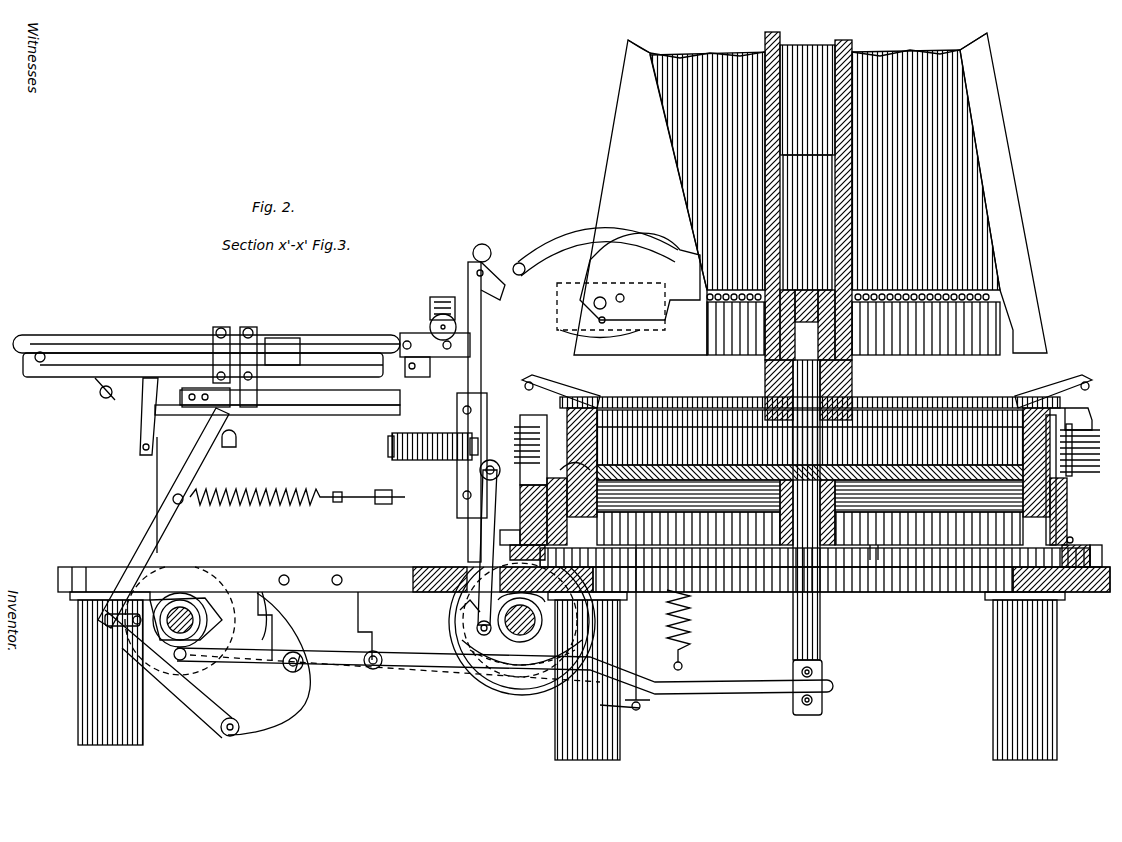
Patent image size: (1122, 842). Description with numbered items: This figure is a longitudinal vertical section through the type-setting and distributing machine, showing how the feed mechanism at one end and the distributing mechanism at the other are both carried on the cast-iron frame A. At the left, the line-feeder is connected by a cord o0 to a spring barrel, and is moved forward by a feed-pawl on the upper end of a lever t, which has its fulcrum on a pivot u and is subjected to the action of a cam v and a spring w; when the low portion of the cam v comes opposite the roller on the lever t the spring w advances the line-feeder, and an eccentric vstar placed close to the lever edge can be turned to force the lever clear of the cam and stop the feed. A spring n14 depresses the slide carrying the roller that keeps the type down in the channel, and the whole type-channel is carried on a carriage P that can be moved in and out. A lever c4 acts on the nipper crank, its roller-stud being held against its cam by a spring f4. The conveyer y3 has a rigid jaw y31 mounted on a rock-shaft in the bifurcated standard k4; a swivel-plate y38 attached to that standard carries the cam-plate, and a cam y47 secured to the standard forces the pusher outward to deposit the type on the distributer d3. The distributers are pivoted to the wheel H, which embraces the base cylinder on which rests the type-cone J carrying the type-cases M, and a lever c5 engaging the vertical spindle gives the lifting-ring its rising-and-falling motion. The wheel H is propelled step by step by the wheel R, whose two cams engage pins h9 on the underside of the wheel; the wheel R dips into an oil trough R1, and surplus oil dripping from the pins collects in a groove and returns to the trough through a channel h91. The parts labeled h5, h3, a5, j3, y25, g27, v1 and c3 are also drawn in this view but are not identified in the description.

The type-cases M is at (810, 194).
The type-cone J is at (900, 326).
The central rod bracket h5 is at (812, 662).
The bifurcated standard k4 is at (530, 380).
The distributer-wheel H is at (807, 476).
The frame A is at (584, 663).
The wheel R is at (522, 629).
The trough R1 is at (522, 655).
The channel h91 is at (533, 599).
The pivot stud h3 is at (521, 616).
The cam v is at (180, 621).
The cam plate a5 is at (190, 619).
The lever t is at (163, 518).
The pivot u is at (207, 672).
The lever c5 is at (503, 622).
The jaw y31 is at (280, 674).
The swivel-plate y38 is at (617, 707).
The spring f4 is at (494, 542).
The lever c4 is at (478, 446).
The vertical post j3 is at (486, 256).
The cam y47 is at (580, 232).
The conveyer y3 is at (619, 285).
The cord o0 is at (206, 348).
The guide bar y25 is at (260, 364).
The hanging link g27 is at (136, 425).
The spring n14 is at (435, 328).
The roller v1 is at (428, 443).
The carriage P is at (352, 455).
The spring w is at (289, 489).
The eccentric vstar is at (238, 437).
The distributer d3 is at (806, 476).
The spring fingers c3 is at (815, 450).
The pins h9 is at (1088, 548).